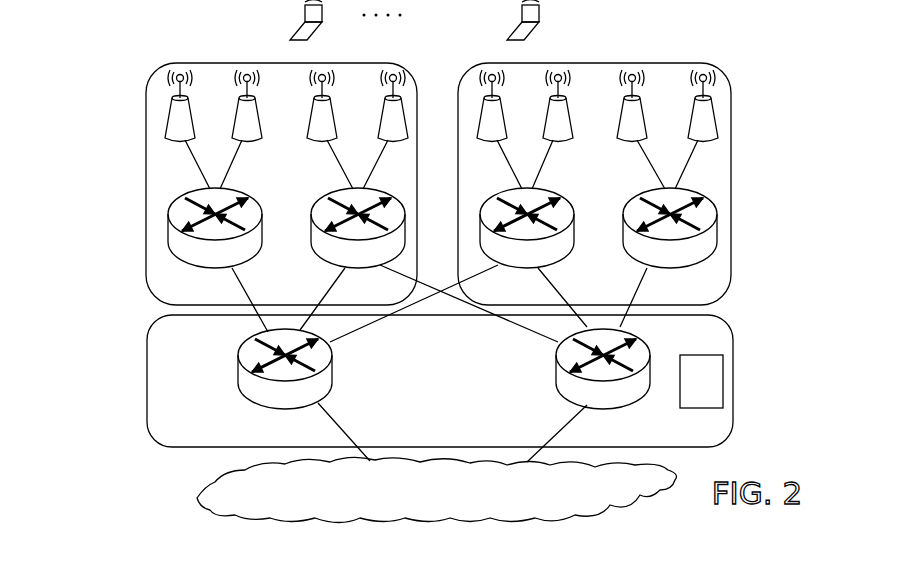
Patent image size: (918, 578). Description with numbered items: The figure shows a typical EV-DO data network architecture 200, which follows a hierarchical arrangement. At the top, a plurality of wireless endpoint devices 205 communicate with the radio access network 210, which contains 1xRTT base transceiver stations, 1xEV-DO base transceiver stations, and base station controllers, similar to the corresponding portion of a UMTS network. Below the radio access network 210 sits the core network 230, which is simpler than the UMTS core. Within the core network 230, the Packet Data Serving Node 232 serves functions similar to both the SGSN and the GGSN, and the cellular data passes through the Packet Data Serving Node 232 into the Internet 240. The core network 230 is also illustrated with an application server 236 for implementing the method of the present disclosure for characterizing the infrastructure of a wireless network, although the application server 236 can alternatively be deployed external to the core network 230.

The EV-DO data network architecture 200 is at (652, 30).
The wireless endpoint devices 205 is at (303, 27).
The radio access network 210 is at (133, 62).
The core network 230 is at (429, 381).
The Packet Data Serving Node (PDSN) 232 is at (243, 380).
The application server 236 is at (724, 378).
The Internet 240 is at (197, 498).